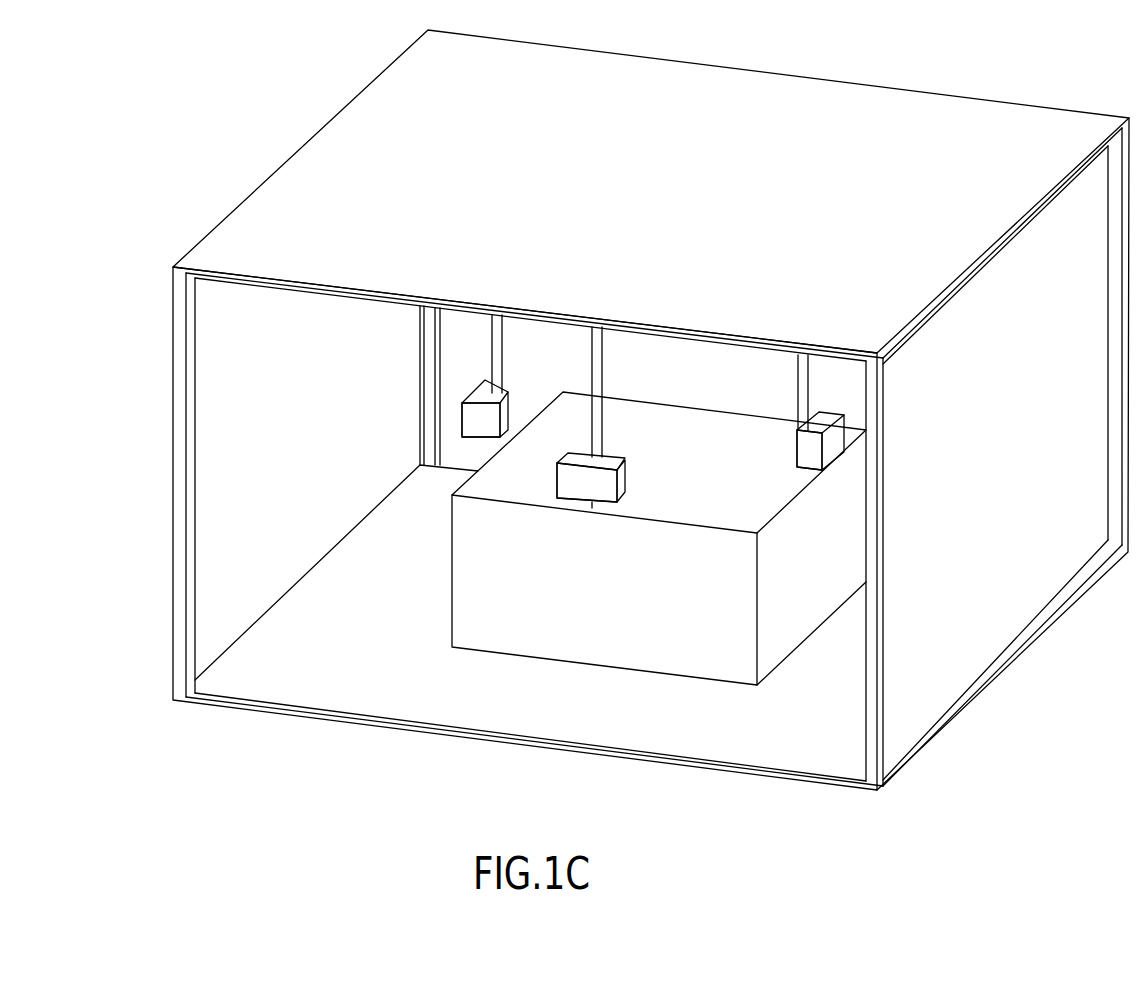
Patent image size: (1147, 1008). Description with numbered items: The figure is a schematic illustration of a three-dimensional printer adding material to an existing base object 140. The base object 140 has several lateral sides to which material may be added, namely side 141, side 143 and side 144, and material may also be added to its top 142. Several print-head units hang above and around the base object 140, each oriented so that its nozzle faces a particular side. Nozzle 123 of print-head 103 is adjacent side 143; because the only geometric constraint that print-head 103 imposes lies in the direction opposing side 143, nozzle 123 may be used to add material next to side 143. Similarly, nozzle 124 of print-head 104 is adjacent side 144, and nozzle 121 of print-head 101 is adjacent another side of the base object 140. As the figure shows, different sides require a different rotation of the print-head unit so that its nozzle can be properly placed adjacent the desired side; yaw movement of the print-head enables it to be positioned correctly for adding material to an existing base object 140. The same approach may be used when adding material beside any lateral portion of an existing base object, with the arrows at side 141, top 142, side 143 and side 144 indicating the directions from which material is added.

The print-head 101 is at (458, 418).
The nozzle 121 is at (500, 438).
The print-head 103 is at (790, 497).
The nozzle 123 is at (797, 473).
The nozzle 124 is at (590, 506).
The print-head 104 is at (625, 480).
The base object 140 is at (468, 624).
The side 141 is at (436, 597).
The top 142 is at (691, 455).
The side 143 is at (802, 586).
The side 144 is at (731, 632).